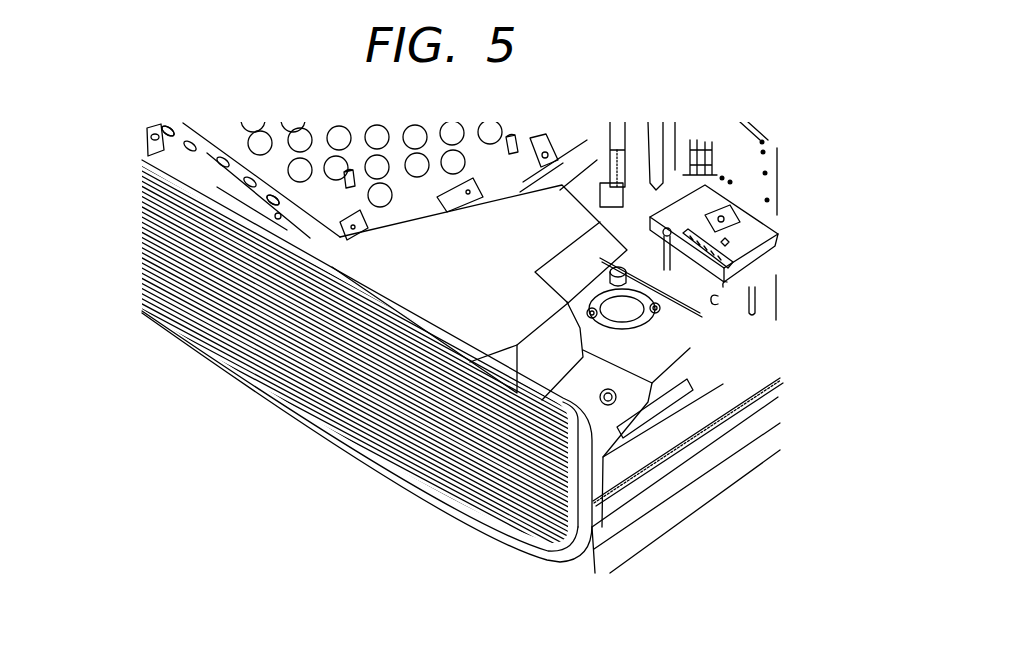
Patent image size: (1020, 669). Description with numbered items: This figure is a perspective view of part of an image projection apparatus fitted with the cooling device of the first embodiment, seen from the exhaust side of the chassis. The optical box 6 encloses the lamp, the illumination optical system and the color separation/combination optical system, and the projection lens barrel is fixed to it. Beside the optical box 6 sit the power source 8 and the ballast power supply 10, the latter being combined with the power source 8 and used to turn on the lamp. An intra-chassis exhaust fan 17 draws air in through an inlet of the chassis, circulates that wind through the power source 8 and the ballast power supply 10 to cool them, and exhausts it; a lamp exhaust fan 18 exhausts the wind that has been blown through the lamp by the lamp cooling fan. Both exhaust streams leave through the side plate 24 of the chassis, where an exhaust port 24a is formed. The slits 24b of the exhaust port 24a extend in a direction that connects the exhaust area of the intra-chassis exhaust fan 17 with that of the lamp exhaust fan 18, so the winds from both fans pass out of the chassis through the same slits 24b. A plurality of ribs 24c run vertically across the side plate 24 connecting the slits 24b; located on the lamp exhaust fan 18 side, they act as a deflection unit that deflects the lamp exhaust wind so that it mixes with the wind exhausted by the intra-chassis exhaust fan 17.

The optical box 6 is at (653, 353).
The power source 8 is at (263, 165).
The ballast power supply 10 is at (175, 153).
The exhaust fan (intra-chassis exhaust fan) 17 is at (210, 180).
The exhaust fan (lamp exhaust fan) 18 is at (393, 293).
The side plate 24 is at (547, 556).
The exhaust port 24a is at (477, 527).
The slits 24b is at (413, 445).
The ribs 24c is at (353, 425).